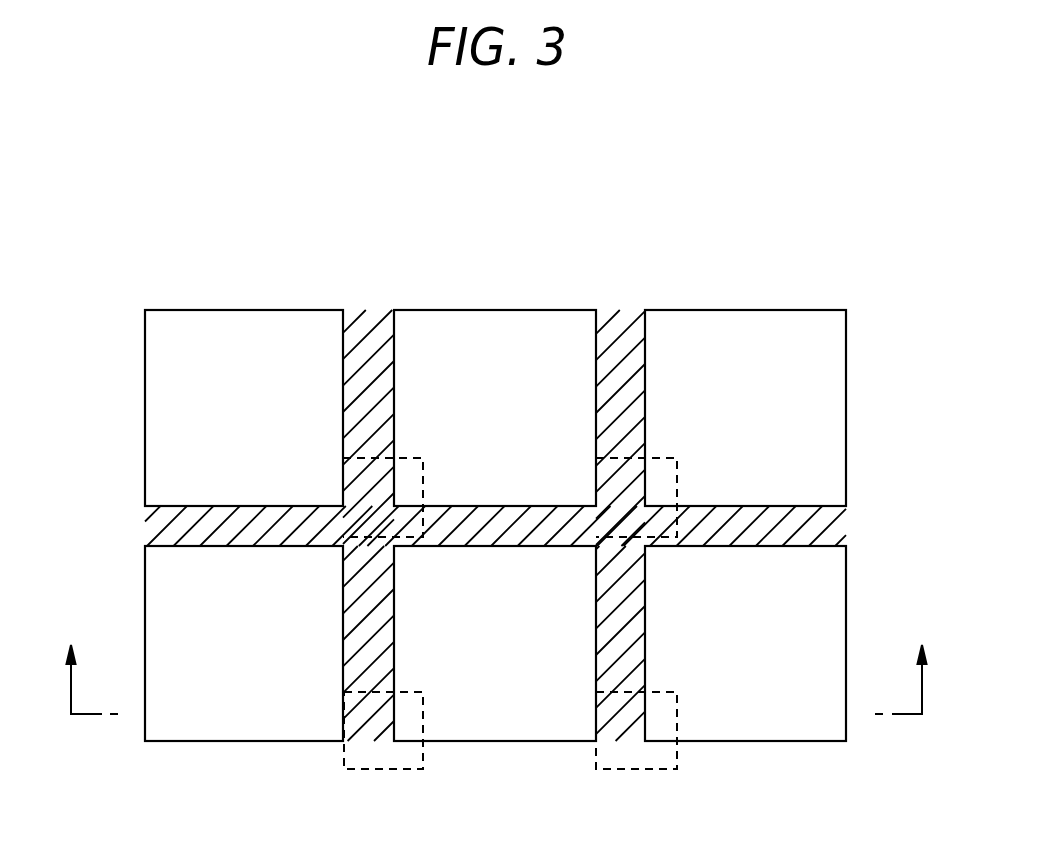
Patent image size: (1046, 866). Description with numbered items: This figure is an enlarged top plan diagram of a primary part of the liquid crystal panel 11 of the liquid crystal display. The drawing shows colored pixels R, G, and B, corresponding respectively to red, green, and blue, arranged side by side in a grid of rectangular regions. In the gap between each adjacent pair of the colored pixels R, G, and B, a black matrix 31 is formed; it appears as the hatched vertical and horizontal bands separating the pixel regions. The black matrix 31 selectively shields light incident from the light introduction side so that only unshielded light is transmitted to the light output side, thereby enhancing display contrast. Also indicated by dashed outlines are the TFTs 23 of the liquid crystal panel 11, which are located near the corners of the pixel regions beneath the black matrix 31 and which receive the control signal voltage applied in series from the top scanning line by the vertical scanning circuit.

The liquid crystal panel 11 is at (670, 255).
The black matrix 31 is at (363, 322).
The TFT 23 is at (407, 774).